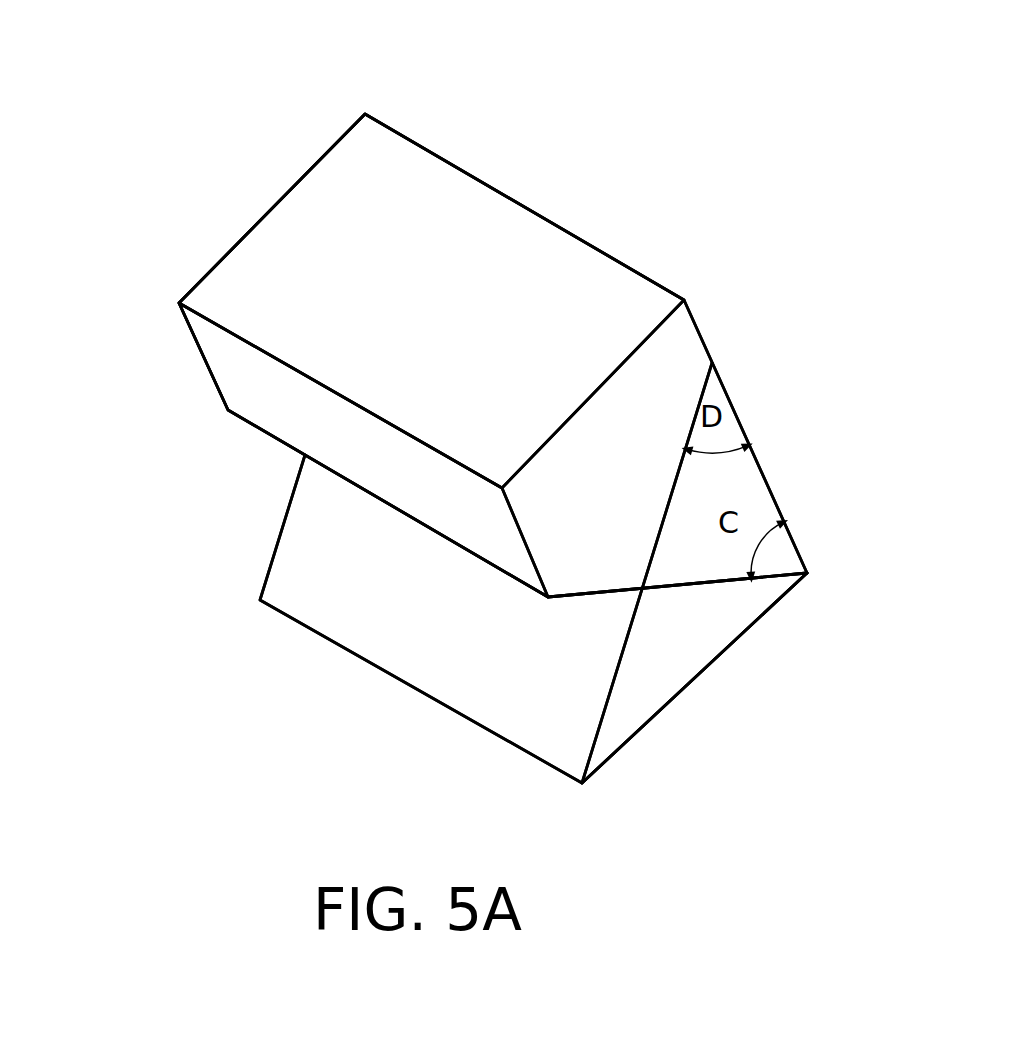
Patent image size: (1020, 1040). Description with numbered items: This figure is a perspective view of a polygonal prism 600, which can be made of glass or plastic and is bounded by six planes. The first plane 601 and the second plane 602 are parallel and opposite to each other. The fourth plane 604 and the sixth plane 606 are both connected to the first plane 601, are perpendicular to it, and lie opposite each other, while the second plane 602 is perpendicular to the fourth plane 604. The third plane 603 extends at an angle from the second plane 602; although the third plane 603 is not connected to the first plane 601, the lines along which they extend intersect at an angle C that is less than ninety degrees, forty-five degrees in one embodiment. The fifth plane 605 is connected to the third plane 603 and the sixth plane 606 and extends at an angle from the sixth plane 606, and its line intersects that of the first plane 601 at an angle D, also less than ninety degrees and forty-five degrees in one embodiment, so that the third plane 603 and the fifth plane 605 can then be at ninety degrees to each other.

The polygonal prism 600 is at (525, 174).
The first plane 601 is at (727, 395).
The second plane 602 is at (230, 368).
The third plane 603 is at (590, 598).
The fourth plane 604 is at (527, 250).
The fifth plane 605 is at (563, 700).
The sixth plane 606 is at (772, 592).